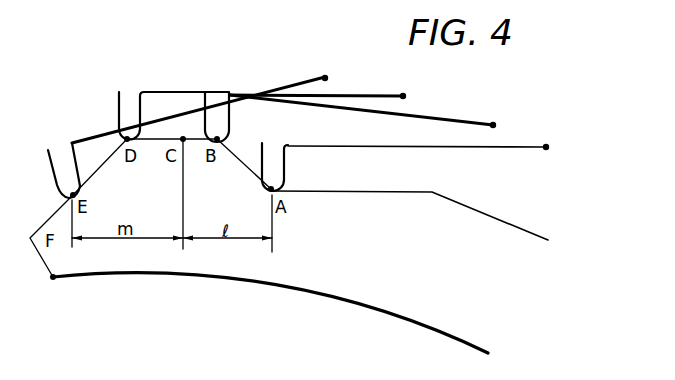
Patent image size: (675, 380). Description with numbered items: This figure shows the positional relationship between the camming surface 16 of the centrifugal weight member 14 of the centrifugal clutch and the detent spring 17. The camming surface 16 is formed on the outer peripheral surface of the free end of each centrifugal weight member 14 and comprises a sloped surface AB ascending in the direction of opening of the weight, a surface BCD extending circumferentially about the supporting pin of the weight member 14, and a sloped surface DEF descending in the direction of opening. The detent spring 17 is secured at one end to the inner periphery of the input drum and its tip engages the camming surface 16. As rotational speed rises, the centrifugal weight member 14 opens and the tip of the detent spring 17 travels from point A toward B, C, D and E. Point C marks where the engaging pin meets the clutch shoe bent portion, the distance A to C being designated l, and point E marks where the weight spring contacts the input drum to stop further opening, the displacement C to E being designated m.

The centrifugal weight member 14 is at (218, 267).
The camming surface 16 is at (181, 133).
The detent spring 17 is at (344, 93).